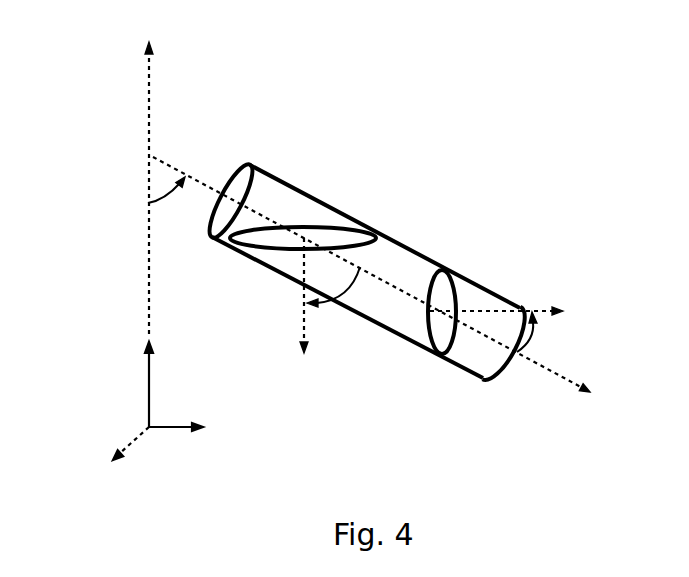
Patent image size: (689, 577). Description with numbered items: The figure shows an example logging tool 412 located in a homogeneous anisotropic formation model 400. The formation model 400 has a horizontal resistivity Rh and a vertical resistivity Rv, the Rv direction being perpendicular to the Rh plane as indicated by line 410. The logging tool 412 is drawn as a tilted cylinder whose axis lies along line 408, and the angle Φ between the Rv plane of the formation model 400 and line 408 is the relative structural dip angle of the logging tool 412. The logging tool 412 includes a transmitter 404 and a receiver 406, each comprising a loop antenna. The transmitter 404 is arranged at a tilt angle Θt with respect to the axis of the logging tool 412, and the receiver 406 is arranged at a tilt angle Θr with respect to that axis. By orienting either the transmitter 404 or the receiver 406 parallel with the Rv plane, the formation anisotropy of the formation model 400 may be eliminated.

The homogeneous anisotropic formation model 400 is at (415, 50).
The transmitter 404 is at (377, 228).
The receiver 406 is at (446, 262).
The line 408 is at (575, 364).
The line 410 is at (138, 99).
The logging tool 412 is at (424, 370).